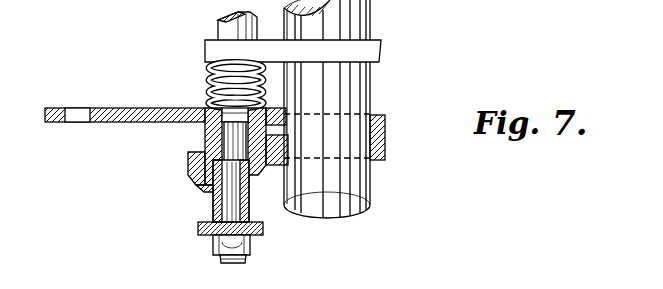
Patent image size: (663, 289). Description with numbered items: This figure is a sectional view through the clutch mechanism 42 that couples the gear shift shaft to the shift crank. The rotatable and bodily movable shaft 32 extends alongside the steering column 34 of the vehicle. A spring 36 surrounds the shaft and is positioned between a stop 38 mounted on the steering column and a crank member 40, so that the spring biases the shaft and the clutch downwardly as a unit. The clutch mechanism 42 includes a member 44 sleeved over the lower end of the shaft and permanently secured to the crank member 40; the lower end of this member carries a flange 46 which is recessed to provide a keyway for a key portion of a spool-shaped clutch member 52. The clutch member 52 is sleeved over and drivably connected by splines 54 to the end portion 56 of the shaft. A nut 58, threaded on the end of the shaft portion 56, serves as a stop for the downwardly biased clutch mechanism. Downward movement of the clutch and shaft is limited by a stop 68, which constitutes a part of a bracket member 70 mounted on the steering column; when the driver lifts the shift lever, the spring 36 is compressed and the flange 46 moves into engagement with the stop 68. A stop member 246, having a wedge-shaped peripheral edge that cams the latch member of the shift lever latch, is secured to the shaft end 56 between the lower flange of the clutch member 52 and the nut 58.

The shaft 32 is at (214, 22).
The steering column 34 is at (371, 190).
The spring 36 is at (207, 78).
The stop 38 is at (355, 50).
The crank member 40 is at (112, 108).
The clutch mechanism 42 is at (190, 180).
The member 44 is at (205, 134).
The flange 46 is at (188, 160).
The clutch member 52 is at (211, 190).
The splines 54 is at (215, 110).
The end portion of the shaft 56 is at (250, 240).
The nut 58 is at (220, 258).
The stop 68 is at (260, 183).
The bracket member 70 is at (385, 124).
The stop member 246 is at (204, 235).